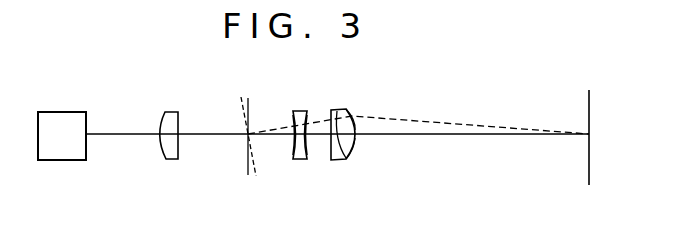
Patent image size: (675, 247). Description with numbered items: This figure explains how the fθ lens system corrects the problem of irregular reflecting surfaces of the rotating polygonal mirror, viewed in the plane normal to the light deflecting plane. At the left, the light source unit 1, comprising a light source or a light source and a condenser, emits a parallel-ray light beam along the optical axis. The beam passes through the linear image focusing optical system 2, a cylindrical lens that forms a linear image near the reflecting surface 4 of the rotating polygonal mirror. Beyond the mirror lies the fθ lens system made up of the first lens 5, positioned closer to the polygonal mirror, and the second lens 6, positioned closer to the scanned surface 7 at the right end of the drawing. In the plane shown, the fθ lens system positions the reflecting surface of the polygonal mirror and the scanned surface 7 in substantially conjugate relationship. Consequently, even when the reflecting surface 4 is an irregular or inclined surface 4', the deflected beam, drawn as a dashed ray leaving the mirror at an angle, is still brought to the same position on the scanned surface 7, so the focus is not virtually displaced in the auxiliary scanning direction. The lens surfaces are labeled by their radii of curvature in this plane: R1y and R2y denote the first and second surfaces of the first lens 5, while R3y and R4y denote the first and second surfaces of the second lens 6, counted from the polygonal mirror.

The light source unit 1 is at (71, 154).
The linear image focusing optical system 2 is at (172, 152).
The reflecting surface 4 is at (236, 151).
The irregular or inclined surface 4' is at (241, 196).
The first lens 5 is at (301, 160).
The second lens 6 is at (348, 160).
The scanned surface 7 is at (589, 166).
The radius of curvature of the first surface of the first lens in the plane normal t R1y is at (292, 145).
The radius of curvature of the second surface of the first lens in the plane normal R2y is at (309, 118).
The radius of curvature of the first surface of the second lens in the plane normal R3y is at (355, 116).
The radius of curvature of the second surface of the second lens in the plane normal R4y is at (357, 145).